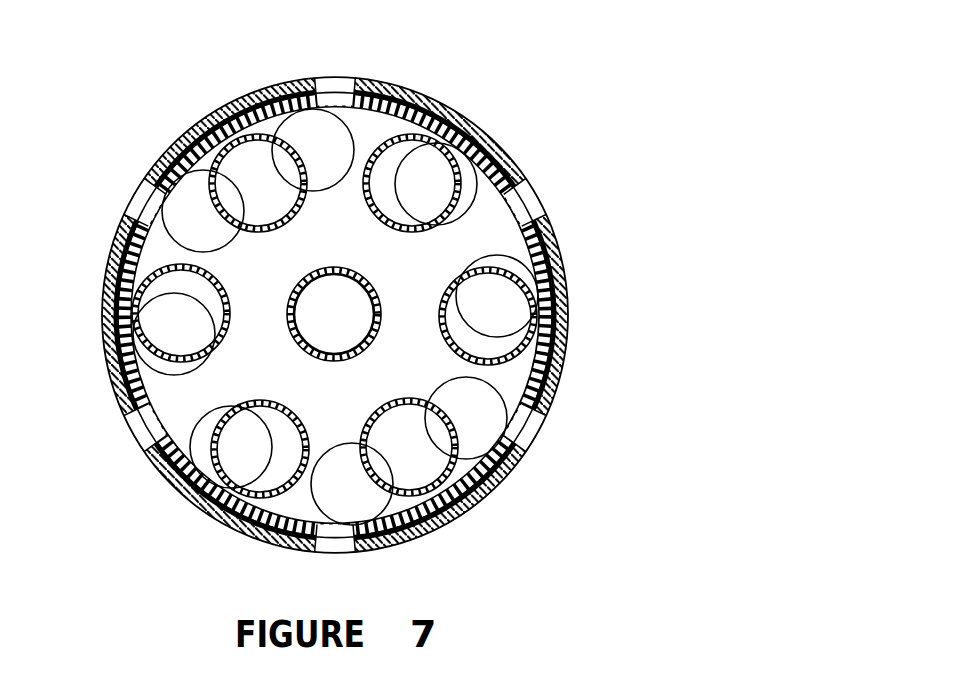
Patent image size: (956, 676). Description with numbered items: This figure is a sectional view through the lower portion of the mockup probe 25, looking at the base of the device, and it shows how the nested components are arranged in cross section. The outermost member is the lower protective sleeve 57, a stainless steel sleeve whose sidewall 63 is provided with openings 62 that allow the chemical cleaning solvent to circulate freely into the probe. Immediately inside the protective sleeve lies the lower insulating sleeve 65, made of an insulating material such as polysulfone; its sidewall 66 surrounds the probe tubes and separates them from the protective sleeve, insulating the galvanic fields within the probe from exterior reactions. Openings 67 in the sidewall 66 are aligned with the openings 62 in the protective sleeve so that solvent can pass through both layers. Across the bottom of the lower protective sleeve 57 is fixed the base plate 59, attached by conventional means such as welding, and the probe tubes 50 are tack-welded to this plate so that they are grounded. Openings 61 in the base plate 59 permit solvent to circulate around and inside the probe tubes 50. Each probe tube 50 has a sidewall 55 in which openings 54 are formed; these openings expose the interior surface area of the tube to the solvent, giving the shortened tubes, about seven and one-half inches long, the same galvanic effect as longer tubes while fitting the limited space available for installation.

The mockup probe 25 is at (458, 68).
The lower protective sleeve 57 is at (290, 81).
The sidewall of protective sleeve 63 is at (492, 162).
The opening in protective sleeve sidewall 62 is at (528, 195).
The opening in insulating sleeve sidewall 67 is at (542, 216).
The lower insulating sleeve 65 is at (559, 277).
The sidewall of insulating sleeve 66 is at (566, 318).
The base plate 59 is at (369, 255).
The opening in base plate 61 is at (329, 156).
The opening in probe tube sidewall 54 is at (306, 194).
The probe tube sidewall 55 is at (227, 300).
The probe tube 50 is at (277, 237).